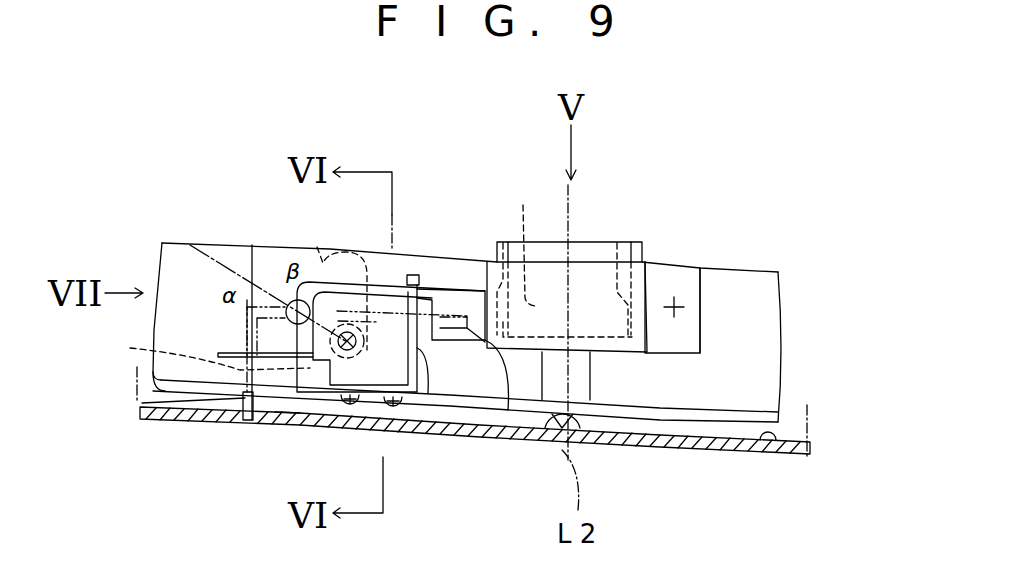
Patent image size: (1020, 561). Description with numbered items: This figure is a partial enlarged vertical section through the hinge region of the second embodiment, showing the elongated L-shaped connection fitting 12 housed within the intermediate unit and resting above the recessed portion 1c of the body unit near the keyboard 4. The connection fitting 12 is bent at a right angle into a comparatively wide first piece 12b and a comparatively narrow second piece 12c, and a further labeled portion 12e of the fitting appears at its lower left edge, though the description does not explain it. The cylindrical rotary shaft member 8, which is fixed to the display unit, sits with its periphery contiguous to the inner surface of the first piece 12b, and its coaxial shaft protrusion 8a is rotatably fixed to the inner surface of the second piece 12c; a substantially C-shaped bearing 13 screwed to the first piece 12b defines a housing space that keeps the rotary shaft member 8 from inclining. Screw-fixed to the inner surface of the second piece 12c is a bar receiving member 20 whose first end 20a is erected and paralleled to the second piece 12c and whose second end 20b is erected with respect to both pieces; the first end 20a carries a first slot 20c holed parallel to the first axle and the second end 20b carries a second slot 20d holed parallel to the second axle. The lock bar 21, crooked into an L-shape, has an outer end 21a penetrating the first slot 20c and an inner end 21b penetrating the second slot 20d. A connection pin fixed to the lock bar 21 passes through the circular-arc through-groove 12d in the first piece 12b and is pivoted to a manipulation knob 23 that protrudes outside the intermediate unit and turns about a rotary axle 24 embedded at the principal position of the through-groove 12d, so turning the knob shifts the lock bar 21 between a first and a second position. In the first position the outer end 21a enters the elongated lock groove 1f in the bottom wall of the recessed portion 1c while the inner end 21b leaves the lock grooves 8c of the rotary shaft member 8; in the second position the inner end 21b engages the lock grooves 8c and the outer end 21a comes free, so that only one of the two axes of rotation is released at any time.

The recessed portion 1c is at (767, 437).
The lock groove 1f is at (287, 426).
The keyboard 4 is at (533, 437).
The rotary shaft member 8 is at (645, 250).
The shaft protrusion 8a is at (590, 378).
The lock grooves 8c is at (617, 243).
The connection fitting 12 is at (765, 335).
The first piece 12b is at (752, 297).
The second piece 12c is at (662, 412).
The circular-arc through-groove 12d is at (360, 247).
The slider foot 12e is at (200, 402).
The bearing 13 is at (647, 285).
The bar receiving member 20 is at (430, 392).
The first end 20a is at (218, 352).
The second end 20b is at (430, 360).
The first slot 20c is at (192, 352).
The second slot 20d is at (410, 275).
The lock bar 21 is at (252, 245).
The outer end 21a is at (290, 402).
The inner end 21b is at (488, 475).
The manipulation knob 23 is at (317, 247).
The rotary axle 24 is at (347, 412).